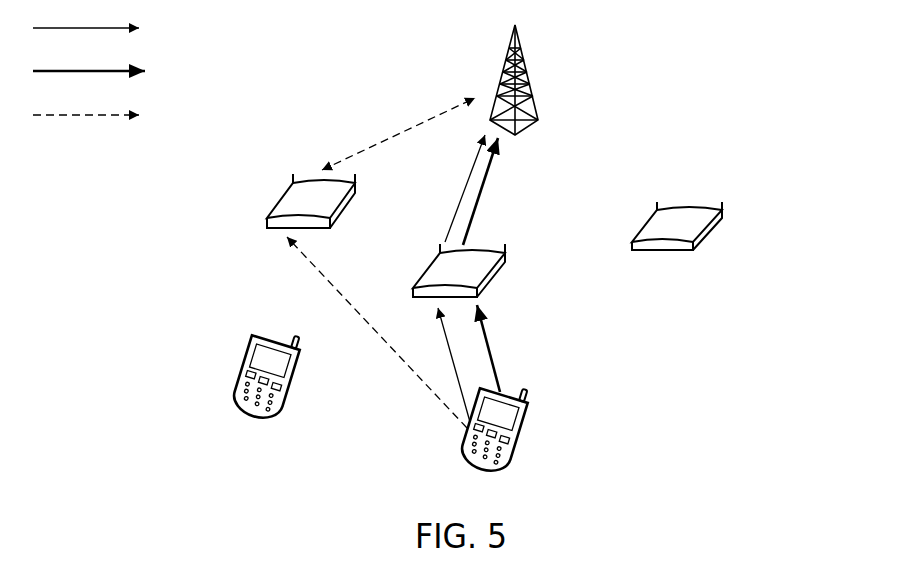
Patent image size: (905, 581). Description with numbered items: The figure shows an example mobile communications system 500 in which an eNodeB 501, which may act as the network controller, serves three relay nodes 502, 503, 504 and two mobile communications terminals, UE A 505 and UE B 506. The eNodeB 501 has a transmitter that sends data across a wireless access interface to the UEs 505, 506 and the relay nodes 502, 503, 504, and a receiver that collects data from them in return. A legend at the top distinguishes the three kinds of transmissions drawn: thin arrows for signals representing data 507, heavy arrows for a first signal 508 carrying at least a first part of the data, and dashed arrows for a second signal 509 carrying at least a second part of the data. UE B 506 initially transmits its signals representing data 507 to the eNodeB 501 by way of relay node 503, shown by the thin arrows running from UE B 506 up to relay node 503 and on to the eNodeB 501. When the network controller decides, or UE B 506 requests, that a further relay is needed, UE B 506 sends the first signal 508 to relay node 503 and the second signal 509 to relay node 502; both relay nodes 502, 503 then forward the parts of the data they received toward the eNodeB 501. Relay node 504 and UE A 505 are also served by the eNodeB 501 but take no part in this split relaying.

The mobile communications system 500 is at (790, 44).
The eNodeB 501 is at (531, 88).
The relay node 502 is at (268, 207).
The relay node 503 is at (490, 276).
The relay node 504 is at (706, 242).
The UE A 505 is at (293, 385).
The UE B 506 is at (523, 435).
The signals representing data 507 is at (210, 20).
The first signal 508 is at (166, 62).
The second signal 509 is at (183, 105).